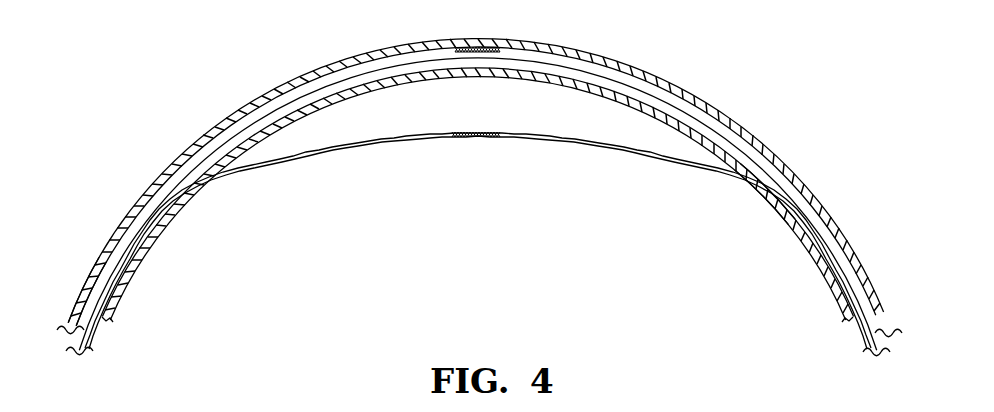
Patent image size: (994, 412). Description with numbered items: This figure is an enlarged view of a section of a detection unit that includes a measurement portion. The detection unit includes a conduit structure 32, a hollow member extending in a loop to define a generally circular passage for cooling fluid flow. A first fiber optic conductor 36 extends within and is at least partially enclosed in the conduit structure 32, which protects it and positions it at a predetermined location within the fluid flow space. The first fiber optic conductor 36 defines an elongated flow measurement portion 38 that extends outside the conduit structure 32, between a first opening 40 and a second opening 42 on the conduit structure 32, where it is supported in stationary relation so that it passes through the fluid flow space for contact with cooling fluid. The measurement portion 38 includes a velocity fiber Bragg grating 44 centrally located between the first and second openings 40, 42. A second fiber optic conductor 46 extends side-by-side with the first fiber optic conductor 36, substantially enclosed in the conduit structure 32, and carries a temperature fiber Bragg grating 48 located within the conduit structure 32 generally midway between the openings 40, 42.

The conduit structure 32 is at (258, 100).
The first fiber optic conductor 36 is at (87, 332).
The flow measurement portion 38 is at (355, 146).
The first opening 40 is at (189, 195).
The second opening 42 is at (765, 196).
The velocity fiber Bragg grating 44 is at (476, 138).
The second fiber optic conductor 46 is at (70, 324).
The temperature fiber Bragg grating 48 is at (462, 42).